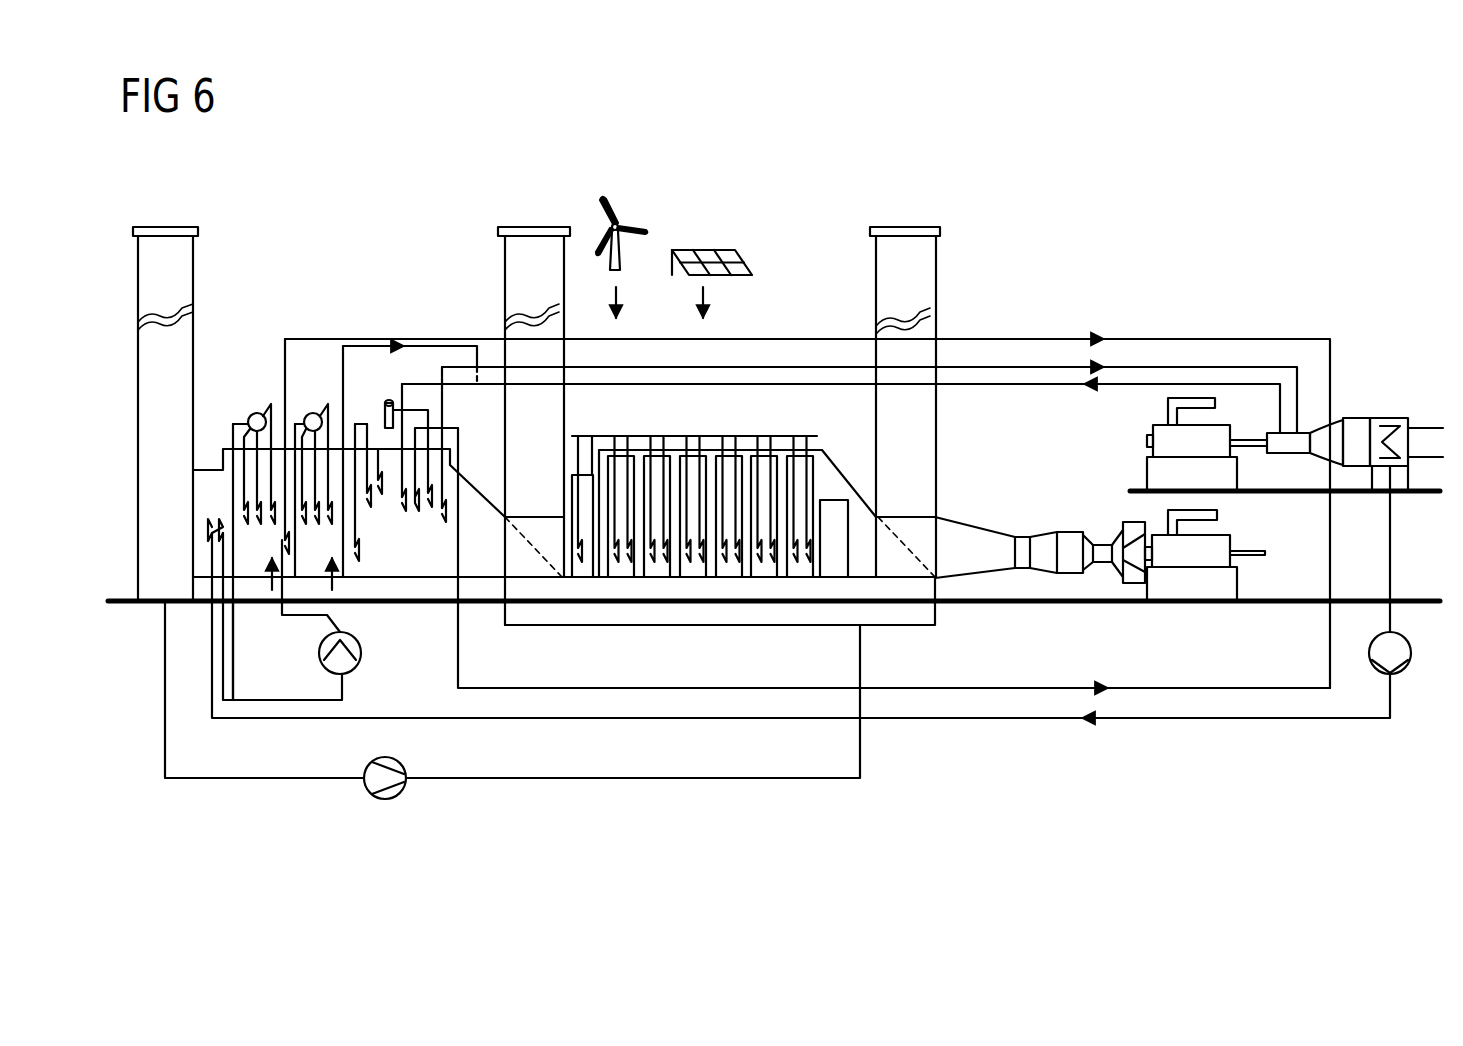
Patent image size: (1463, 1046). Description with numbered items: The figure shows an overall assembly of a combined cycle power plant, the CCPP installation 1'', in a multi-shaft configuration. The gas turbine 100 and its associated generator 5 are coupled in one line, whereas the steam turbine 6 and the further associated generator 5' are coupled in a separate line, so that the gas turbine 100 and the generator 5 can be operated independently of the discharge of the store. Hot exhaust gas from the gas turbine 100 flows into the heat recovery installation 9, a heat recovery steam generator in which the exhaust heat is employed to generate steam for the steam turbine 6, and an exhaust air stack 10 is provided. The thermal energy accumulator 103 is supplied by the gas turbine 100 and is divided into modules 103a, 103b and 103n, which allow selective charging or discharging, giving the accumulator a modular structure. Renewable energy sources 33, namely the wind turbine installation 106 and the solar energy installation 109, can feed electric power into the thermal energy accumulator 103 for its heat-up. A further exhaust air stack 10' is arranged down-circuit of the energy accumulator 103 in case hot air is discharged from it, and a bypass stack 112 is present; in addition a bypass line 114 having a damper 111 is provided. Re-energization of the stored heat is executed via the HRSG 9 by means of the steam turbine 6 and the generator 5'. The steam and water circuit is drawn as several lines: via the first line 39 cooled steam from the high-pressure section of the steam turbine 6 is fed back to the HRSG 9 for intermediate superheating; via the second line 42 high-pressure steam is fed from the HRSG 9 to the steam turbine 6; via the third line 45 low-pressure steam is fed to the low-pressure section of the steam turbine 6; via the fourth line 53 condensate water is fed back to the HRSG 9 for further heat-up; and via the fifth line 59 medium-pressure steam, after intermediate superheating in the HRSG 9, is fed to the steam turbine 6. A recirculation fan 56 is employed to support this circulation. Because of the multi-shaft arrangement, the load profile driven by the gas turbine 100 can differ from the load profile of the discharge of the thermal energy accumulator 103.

The CCPP installation 1'' is at (774, 325).
The renewable energy sources 33 is at (678, 147).
The wind turbine installation 106 is at (623, 220).
The solar energy installation 109 is at (700, 245).
The exhaust air stack 10 is at (196, 414).
The further exhaust air stack 10' is at (495, 426).
The bypass stack 112 is at (936, 255).
The third line 45 is at (810, 338).
The second line 42 is at (1020, 365).
The first line 39 is at (1022, 385).
The fifth line 59 is at (1198, 688).
The fourth line 53 is at (1198, 720).
The recirculation fan 56 is at (386, 800).
The heat recovery installation 9 is at (209, 463).
The thermal energy accumulator 103 is at (745, 426).
The module 103n is at (588, 556).
The module 103b is at (766, 560).
The module 103a is at (803, 560).
The bypass line 114 is at (935, 613).
The damper 111 is at (937, 498).
The gas turbine 100 is at (1075, 520).
The generator 5 is at (1225, 555).
The further generator 5' is at (1228, 386).
The steam turbine 6 is at (1337, 420).